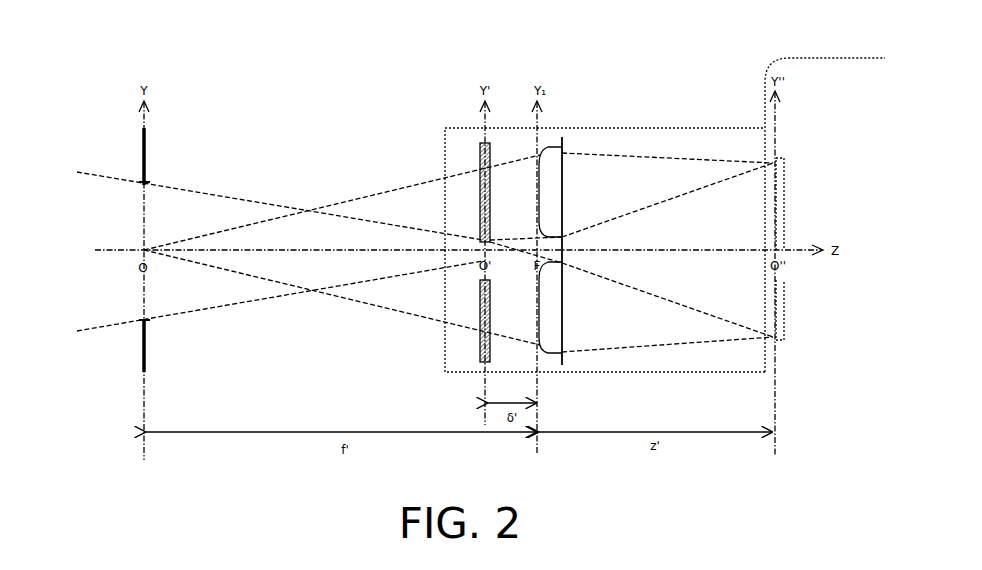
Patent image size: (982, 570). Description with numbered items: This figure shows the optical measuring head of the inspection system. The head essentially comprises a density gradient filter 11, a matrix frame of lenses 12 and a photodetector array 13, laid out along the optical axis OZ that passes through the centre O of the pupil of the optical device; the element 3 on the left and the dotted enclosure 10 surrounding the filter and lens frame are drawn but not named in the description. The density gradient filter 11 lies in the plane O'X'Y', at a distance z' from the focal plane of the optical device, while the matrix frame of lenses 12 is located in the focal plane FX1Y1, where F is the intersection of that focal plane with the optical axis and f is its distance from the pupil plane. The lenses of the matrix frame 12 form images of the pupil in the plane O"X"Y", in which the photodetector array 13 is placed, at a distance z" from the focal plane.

The object 3 is at (147, 150).
The optical system 10 is at (693, 127).
The density gradient filter 11 is at (480, 147).
The matrix frame of lenses 12 is at (552, 190).
The photodetector array 13 is at (784, 205).